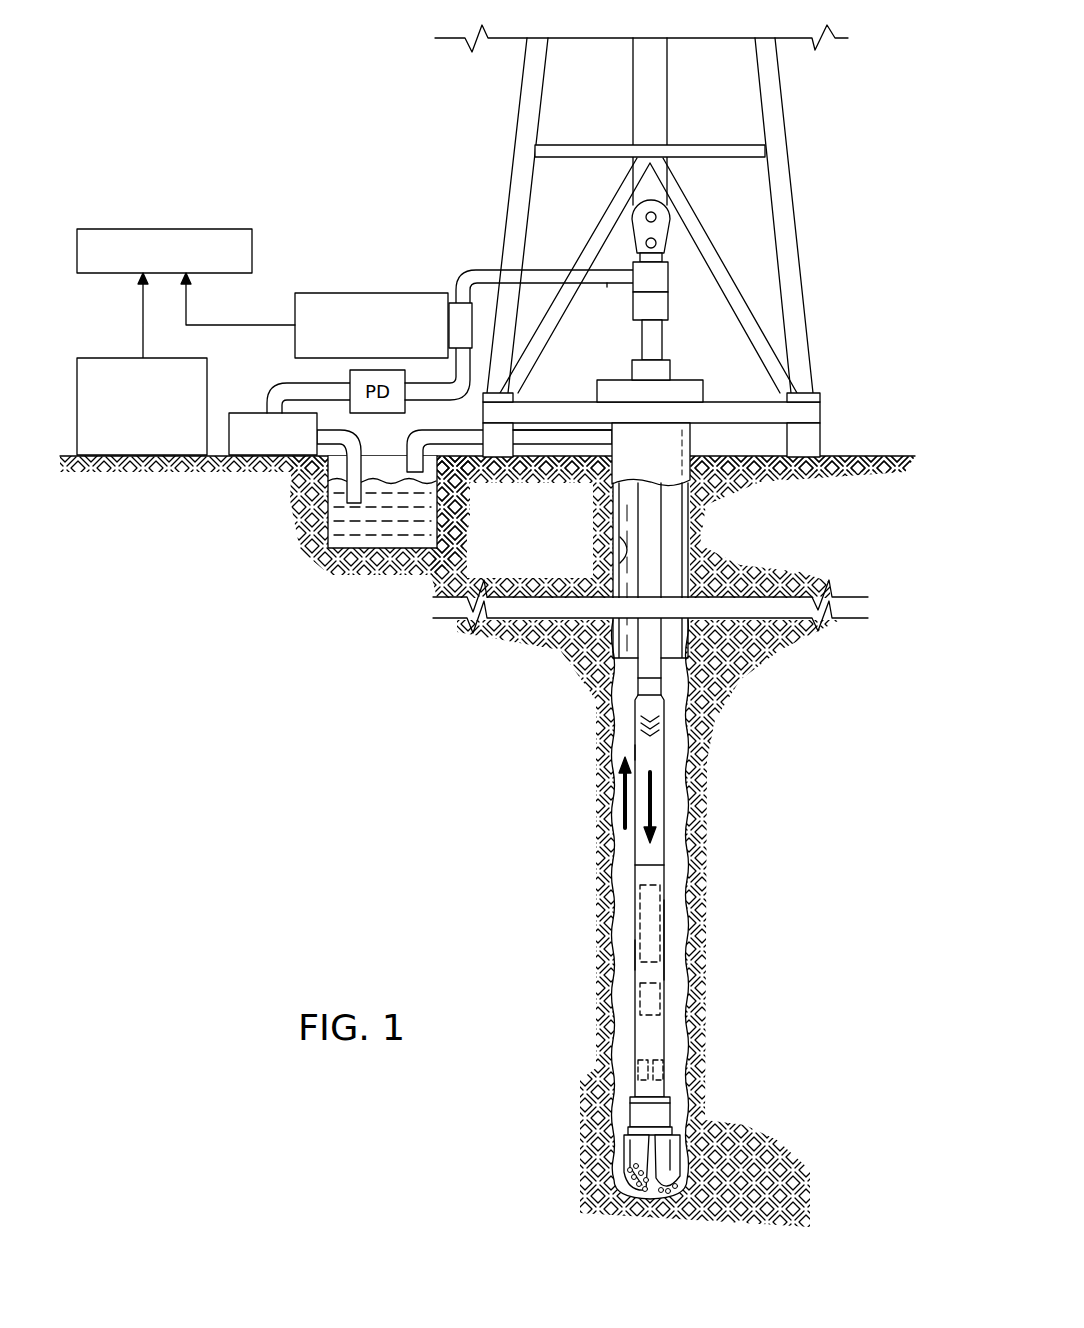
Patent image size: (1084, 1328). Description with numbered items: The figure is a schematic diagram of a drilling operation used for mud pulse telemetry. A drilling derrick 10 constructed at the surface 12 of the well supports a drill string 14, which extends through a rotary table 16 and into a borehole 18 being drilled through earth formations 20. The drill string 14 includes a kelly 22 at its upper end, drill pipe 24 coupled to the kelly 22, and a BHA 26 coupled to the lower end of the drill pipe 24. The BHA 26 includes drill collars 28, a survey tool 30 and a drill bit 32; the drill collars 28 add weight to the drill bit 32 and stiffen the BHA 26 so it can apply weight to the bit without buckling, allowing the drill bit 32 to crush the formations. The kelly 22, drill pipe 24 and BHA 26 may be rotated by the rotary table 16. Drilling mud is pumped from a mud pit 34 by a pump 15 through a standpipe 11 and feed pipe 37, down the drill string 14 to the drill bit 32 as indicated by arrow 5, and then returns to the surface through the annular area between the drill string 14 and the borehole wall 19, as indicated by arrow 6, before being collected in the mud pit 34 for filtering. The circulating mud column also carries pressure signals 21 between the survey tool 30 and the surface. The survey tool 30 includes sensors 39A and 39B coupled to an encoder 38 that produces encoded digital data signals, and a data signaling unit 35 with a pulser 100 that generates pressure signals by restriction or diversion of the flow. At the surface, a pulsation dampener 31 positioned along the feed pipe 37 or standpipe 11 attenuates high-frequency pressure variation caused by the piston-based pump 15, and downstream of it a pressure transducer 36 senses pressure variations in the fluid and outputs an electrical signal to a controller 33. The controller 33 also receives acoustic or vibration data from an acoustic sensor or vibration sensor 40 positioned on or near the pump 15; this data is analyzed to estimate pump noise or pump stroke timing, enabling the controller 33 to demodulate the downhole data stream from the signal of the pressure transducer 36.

The arrow 5 is at (657, 800).
The arrow 6 is at (622, 802).
The drilling derrick 10 is at (510, 167).
The standpipe 11 is at (487, 270).
The surface 12 is at (858, 457).
The drill string 14 is at (613, 503).
The pump 15 is at (252, 412).
The rotary table 16 is at (687, 380).
The borehole 18 is at (672, 530).
The borehole wall 19 is at (620, 535).
The earth formations 20 is at (383, 808).
The pressure signals 21 is at (638, 707).
The kelly 22 is at (637, 345).
The drill pipe 24 is at (637, 667).
The BHA 26 is at (675, 935).
The drill collars 28 is at (657, 750).
The survey tool 30 is at (636, 955).
The pulsation dampener 31 is at (378, 416).
The drill bit 32 is at (670, 1155).
The controller 33 is at (165, 228).
The mud pit 34 is at (357, 537).
The data signaling unit 35 is at (657, 873).
The pressure transducer 36 is at (372, 292).
The feed pipe 37 is at (607, 287).
The encoder 38 is at (653, 995).
The sensor 39A is at (643, 1058).
The sensor 39B is at (657, 1058).
The acoustic sensor or vibration sensor 40 is at (110, 357).
The pulser 100 is at (640, 908).